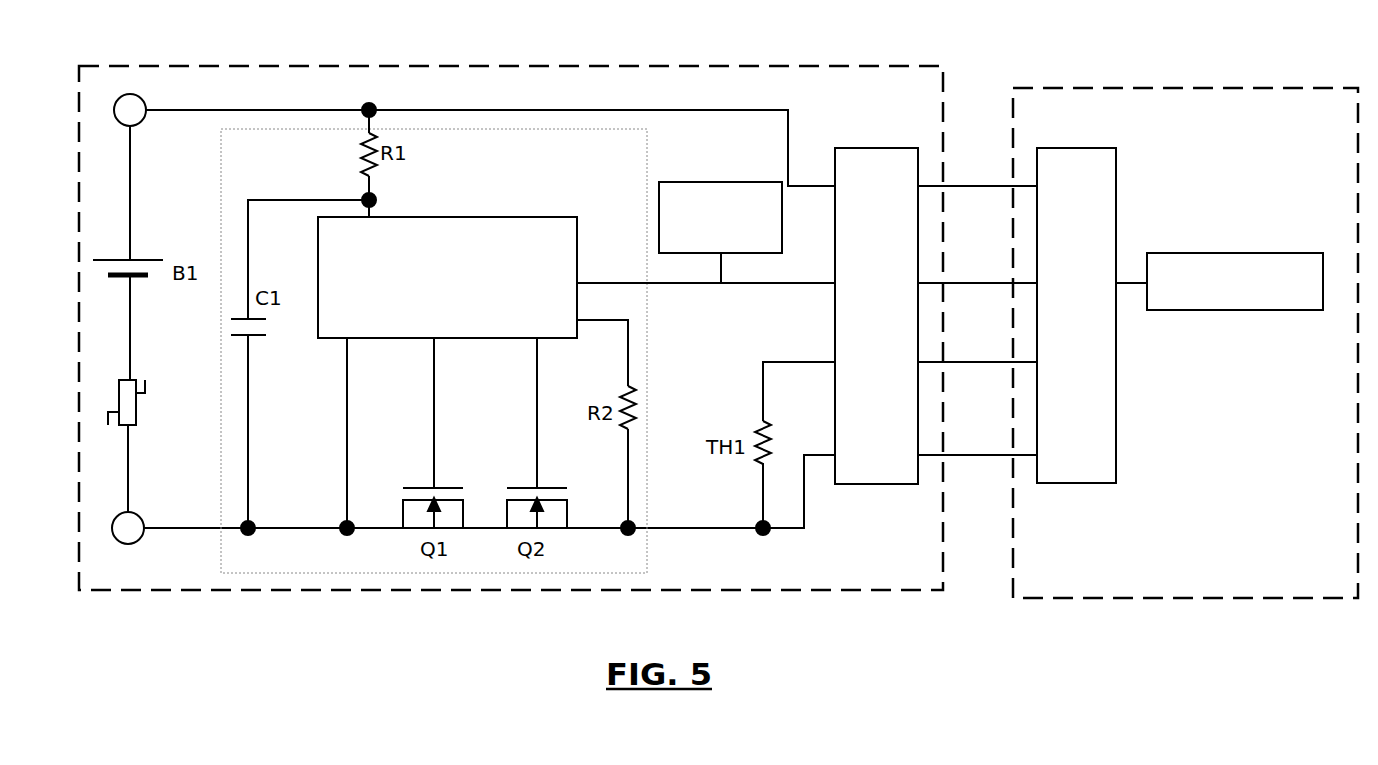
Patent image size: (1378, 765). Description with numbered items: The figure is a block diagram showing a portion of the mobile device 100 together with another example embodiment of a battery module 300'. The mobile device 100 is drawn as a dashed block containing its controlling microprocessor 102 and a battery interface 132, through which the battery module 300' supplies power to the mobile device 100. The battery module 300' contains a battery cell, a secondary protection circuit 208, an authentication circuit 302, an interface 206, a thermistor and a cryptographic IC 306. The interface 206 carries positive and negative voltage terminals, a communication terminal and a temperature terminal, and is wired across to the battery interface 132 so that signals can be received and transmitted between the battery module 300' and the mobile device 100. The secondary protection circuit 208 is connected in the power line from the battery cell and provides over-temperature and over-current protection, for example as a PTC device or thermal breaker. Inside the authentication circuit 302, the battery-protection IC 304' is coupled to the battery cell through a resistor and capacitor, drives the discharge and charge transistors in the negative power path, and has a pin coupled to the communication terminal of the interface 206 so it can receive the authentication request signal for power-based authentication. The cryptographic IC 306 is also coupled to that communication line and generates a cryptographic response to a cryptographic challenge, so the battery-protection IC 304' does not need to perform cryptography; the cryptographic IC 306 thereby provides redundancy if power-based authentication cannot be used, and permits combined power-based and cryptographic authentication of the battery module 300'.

The mobile device 100 is at (1280, 88).
The microprocessor 102 is at (1263, 253).
The battery interface 132 is at (1086, 148).
The interface 206 is at (856, 148).
The secondary protection circuit 208 is at (138, 413).
The battery module 300' is at (512, 307).
The authentication circuit 302 is at (649, 352).
The battery-protection IC 304' is at (447, 262).
The cryptographic IC 306 is at (700, 182).